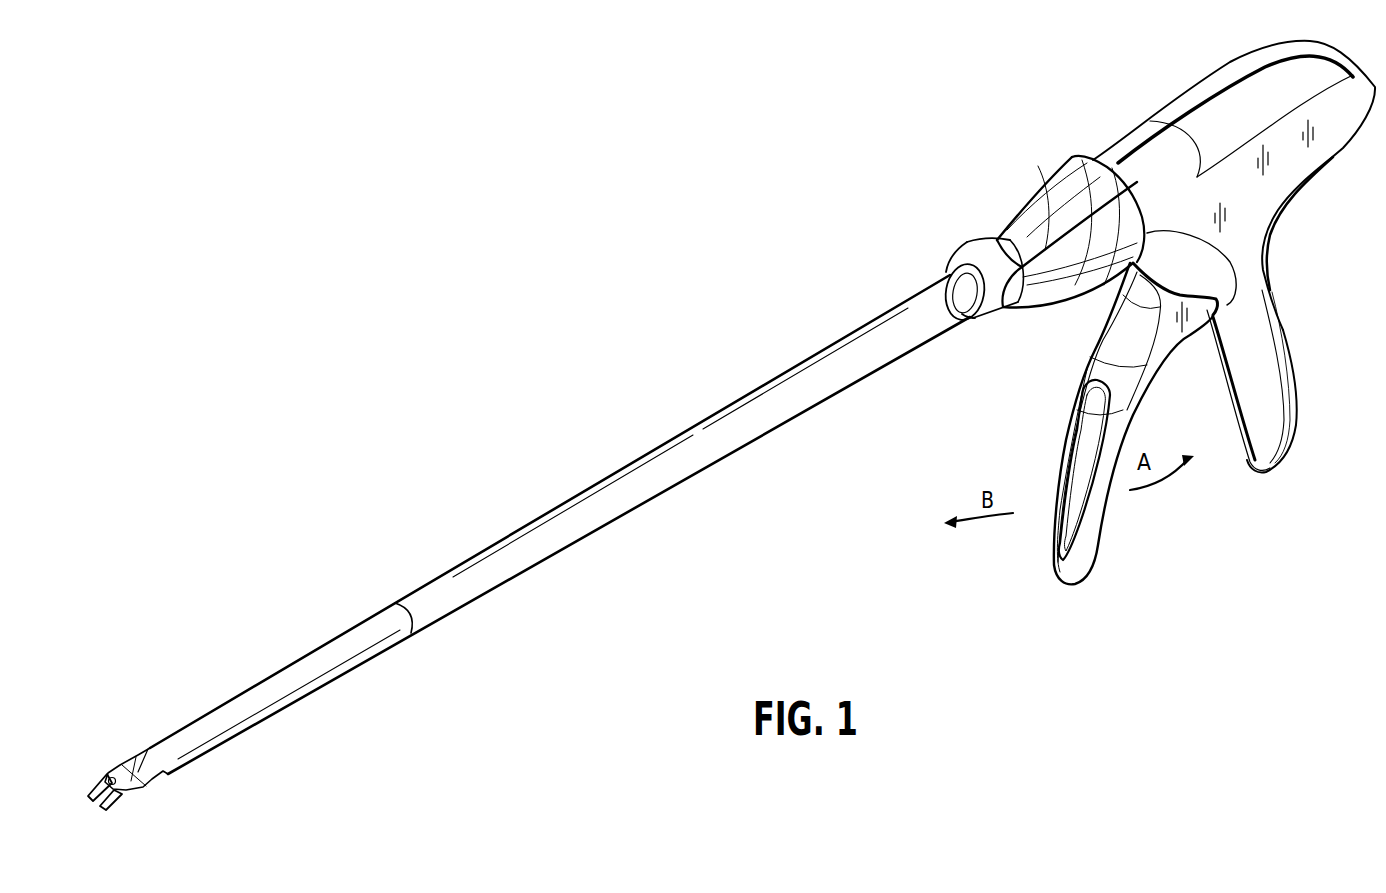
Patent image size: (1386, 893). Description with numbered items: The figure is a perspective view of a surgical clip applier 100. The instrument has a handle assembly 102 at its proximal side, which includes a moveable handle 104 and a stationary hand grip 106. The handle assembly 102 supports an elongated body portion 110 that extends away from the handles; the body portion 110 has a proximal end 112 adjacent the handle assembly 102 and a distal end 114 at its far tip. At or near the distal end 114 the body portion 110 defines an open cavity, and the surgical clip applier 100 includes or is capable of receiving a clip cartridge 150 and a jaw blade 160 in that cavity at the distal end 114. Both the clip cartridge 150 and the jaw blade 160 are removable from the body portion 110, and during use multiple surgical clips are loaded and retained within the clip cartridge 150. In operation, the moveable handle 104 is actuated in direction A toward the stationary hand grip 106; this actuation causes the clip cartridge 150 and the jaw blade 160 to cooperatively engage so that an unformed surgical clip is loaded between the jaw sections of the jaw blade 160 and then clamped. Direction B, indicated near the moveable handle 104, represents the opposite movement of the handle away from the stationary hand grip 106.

The surgical clip applier 100 is at (890, 119).
The handle assembly 102 is at (1153, 172).
The moveable handle 104 is at (1058, 578).
The stationary hand grip 106 is at (1286, 443).
The body portion 110 is at (409, 591).
The proximal end 112 is at (1024, 202).
The distal end 114 is at (136, 762).
The clip cartridge 150 is at (277, 690).
The jaw blade 160 is at (99, 773).